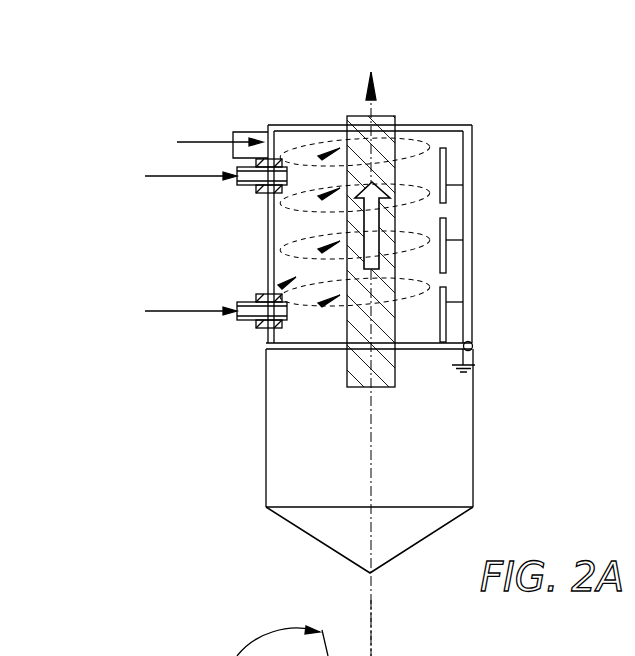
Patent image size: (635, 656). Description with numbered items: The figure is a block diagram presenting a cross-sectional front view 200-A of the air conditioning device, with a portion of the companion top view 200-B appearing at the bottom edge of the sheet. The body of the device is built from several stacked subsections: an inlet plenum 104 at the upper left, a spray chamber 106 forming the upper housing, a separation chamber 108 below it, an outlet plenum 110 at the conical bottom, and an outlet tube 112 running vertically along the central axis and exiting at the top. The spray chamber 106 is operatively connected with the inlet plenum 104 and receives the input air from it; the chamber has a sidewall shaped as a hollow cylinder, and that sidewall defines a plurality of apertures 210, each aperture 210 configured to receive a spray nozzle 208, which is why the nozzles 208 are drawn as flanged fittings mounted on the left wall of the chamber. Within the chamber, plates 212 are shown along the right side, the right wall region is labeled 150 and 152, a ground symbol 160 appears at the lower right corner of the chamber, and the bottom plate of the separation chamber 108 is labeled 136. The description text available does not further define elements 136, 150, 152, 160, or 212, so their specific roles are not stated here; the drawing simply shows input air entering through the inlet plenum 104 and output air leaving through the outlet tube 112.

In FIG. 2A, the cross-sectional front view 200-A is at (172, 72).
In FIG. 2A, the inlet plenum 104 is at (248, 128).
In FIG. 2A, the spray chamber 106 is at (295, 123).
In FIG. 2A, the separation chamber 108 is at (266, 428).
In FIG. 2A, the outlet plenum 110 is at (302, 532).
In FIG. 2A, the outlet tube 112 is at (400, 122).
In FIG. 2B, the outlet tube 112 is at (398, 655).
In FIG. 2A, the body bottom plate 136 is at (436, 495).
In FIG. 2A, the housing side wall 150 is at (484, 329).
In FIG. 2A, the housing wall 152 is at (484, 132).
In FIG. 2A, the ground connection 160 is at (484, 360).
In FIG. 2A, the spray nozzle 208 is at (245, 323).
In FIG. 2A, the aperture 210 is at (298, 280).
In FIG. 2A, the filter plates 212 is at (447, 258).
In FIG. 2B, the filter plates 212 is at (458, 646).
In FIG. 2B, the top view 200-B is at (510, 655).